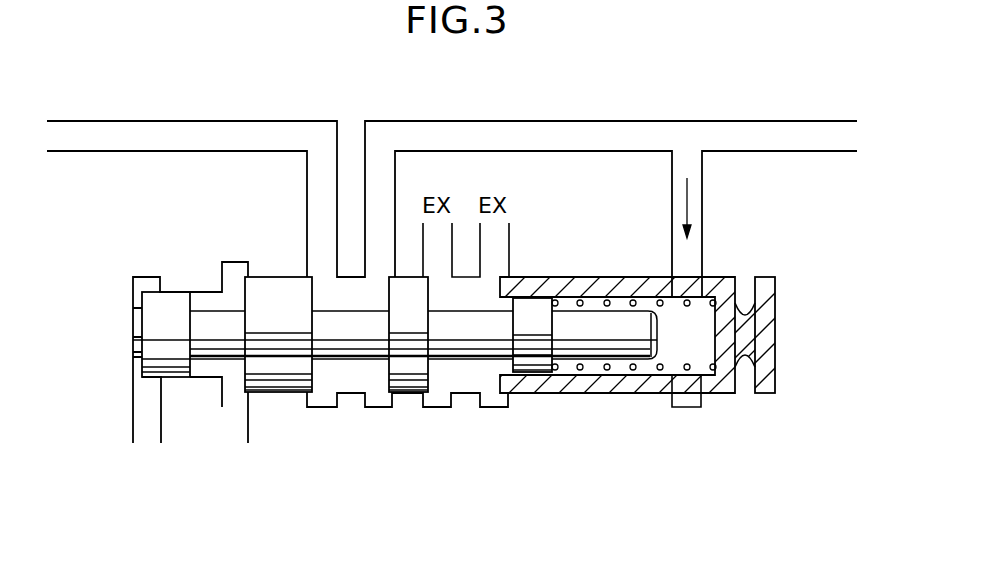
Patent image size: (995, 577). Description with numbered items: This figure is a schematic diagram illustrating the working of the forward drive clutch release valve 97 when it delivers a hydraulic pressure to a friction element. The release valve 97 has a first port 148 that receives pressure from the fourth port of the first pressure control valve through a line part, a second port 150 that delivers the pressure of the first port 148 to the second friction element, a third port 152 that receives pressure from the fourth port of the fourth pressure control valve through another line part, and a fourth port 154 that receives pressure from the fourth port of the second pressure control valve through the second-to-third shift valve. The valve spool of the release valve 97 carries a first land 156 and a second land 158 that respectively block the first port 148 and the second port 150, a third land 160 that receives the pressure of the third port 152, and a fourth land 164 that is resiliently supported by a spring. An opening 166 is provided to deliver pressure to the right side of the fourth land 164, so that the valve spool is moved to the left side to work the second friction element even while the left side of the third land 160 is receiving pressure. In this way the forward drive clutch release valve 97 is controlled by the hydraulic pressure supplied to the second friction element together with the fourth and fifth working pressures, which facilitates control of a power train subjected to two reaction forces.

The forward drive clutch release valve 97 is at (805, 340).
The first port 148 is at (322, 267).
The second port 150 is at (360, 248).
The third port 152 is at (145, 392).
The fourth port 154 is at (235, 407).
The first land 156 is at (283, 343).
The second land 158 is at (407, 343).
The third land 160 is at (158, 322).
The fourth land 164 is at (532, 345).
The opening 166 is at (687, 258).